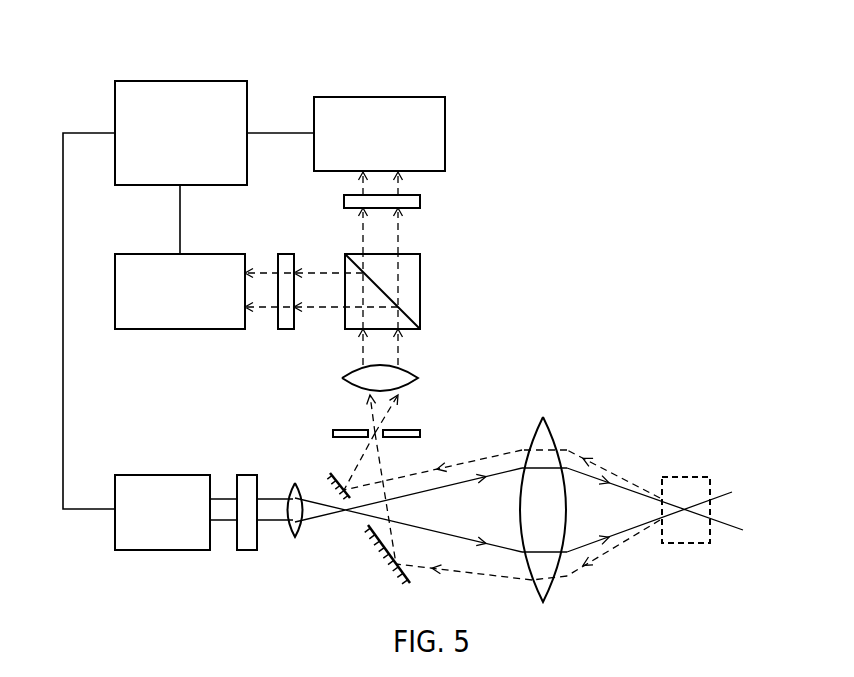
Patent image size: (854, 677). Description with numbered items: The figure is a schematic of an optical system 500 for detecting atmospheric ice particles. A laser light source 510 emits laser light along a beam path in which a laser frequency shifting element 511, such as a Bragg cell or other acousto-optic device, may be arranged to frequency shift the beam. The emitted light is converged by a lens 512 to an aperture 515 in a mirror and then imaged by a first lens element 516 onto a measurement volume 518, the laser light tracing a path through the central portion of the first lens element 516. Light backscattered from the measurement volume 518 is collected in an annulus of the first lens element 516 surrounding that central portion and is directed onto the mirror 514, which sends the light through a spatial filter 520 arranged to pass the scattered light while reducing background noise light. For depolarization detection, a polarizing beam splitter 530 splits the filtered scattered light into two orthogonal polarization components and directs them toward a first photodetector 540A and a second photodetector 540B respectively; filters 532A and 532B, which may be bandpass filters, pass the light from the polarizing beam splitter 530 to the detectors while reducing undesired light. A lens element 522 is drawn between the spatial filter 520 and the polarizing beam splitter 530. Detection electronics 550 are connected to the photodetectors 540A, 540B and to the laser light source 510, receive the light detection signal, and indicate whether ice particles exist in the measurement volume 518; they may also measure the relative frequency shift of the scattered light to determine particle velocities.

The optical system 500 is at (546, 164).
The laser light source 510 is at (153, 551).
The laser frequency shifting element 511 is at (250, 551).
The lens 512 is at (292, 487).
The mirror 514 is at (342, 477).
The aperture 515 is at (358, 518).
The first lens element 516 is at (548, 425).
The measurement volume 518 is at (683, 477).
The spatial filter 520 is at (420, 433).
The lens 522 is at (418, 372).
The polarizing beam splitter 530 is at (421, 277).
The filter 532A is at (421, 201).
The filter 532B is at (287, 330).
The first photodetector 540A is at (447, 123).
The second photodetector 540B is at (153, 330).
The detection electronics 550 is at (130, 80).